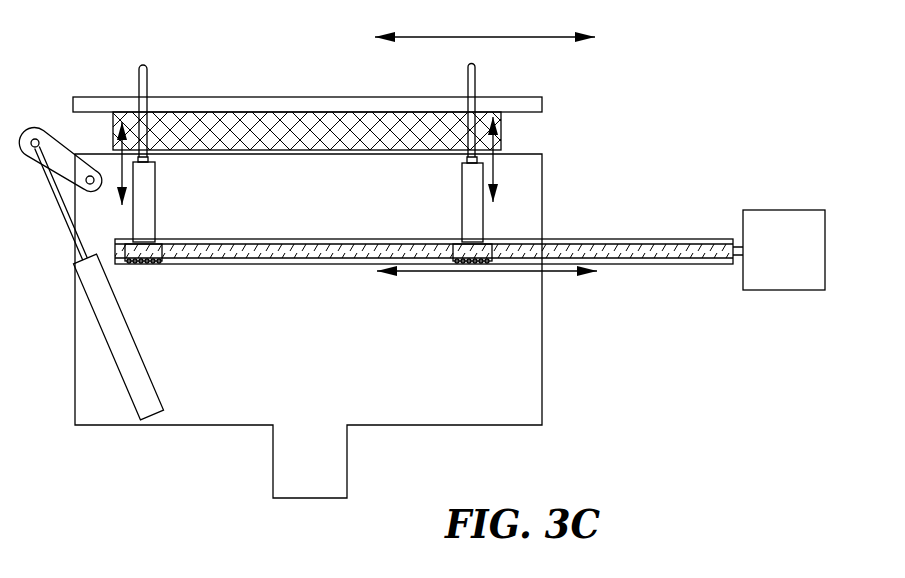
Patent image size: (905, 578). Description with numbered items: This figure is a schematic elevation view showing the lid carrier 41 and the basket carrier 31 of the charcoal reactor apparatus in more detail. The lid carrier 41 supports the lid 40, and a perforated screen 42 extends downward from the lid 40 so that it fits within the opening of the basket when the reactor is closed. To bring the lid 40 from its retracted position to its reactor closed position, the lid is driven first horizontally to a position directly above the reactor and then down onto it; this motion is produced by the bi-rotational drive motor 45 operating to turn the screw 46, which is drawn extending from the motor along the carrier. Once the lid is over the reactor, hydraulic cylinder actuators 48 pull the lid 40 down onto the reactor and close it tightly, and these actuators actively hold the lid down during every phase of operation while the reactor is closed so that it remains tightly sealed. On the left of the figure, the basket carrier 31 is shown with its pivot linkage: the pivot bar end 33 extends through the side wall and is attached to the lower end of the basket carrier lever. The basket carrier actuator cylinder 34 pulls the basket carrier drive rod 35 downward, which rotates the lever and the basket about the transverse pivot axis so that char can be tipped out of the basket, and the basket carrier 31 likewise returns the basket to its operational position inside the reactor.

The basket carrier 31 is at (153, 337).
The pivot bar end 33 is at (66, 151).
The basket carrier actuator cylinder 34 is at (106, 354).
The basket carrier drive rod 35 is at (66, 226).
The lid 40 is at (542, 104).
The lid carrier 41 is at (672, 140).
The perforated screen 42 is at (503, 147).
The bi-rotational drive motor 45 is at (781, 210).
The screw 46 is at (721, 238).
The hydraulic cylinder actuators 48 is at (467, 205).